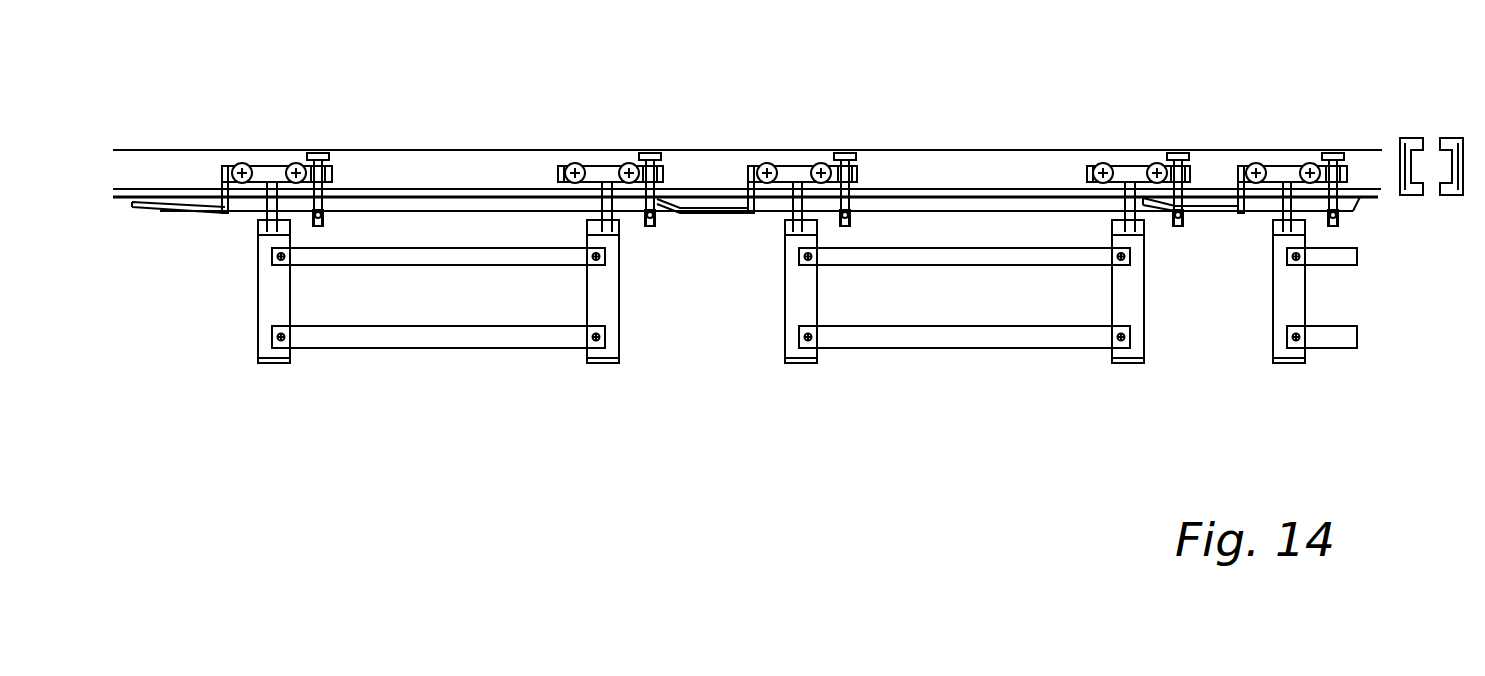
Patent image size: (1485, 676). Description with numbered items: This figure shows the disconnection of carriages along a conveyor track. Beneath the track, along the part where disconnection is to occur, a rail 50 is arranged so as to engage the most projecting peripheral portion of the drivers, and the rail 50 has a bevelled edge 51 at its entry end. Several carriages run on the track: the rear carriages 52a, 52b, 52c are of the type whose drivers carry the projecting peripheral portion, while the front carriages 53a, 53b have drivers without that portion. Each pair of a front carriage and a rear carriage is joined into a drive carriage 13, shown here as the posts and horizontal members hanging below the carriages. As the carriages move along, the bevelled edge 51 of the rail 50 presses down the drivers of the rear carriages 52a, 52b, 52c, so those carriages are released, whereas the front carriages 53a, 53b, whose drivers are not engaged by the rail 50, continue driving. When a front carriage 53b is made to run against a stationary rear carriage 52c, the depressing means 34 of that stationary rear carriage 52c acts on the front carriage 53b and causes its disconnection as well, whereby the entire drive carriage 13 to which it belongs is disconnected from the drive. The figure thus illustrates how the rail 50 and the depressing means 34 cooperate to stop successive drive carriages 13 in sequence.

The drive carriage 13 is at (975, 340).
The depressing means 34 is at (1215, 206).
The rail 50 is at (436, 205).
The bevelled edge 51 is at (162, 215).
The rear carriage 52a is at (268, 170).
The rear carriage 52b is at (797, 172).
The rear carriage 52c is at (1284, 168).
The front carriage 53a is at (606, 172).
The front carriage 53b is at (1131, 172).